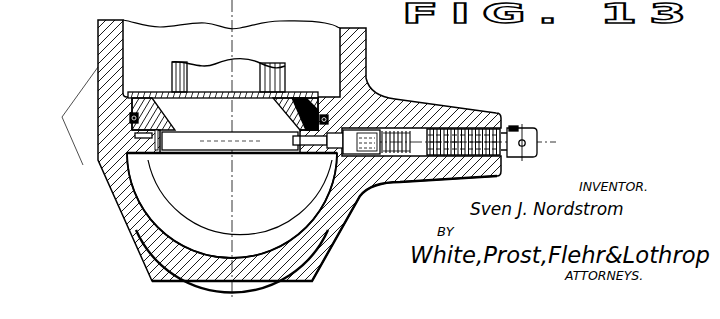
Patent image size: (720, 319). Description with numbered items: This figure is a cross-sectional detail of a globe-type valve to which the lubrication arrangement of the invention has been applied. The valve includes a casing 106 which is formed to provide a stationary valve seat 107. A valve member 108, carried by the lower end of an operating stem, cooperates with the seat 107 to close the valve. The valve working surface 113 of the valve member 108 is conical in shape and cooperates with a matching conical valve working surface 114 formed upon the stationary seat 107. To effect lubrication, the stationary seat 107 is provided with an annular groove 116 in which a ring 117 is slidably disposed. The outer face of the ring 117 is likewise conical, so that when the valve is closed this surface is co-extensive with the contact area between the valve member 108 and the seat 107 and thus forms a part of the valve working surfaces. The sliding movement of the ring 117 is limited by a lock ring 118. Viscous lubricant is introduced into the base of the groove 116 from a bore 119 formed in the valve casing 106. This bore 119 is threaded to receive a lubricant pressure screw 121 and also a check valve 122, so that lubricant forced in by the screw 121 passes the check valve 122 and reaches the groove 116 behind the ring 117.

The casing 106 is at (98, 68).
The stationary valve seat 107 is at (290, 153).
The valve member 108 is at (173, 72).
The valve working surface 113 is at (274, 102).
The valve working surface 114 is at (155, 153).
The annular groove 116 is at (100, 155).
The ring 117 is at (135, 133).
The lock ring 118 is at (130, 117).
The bore 119 is at (423, 131).
The lubricant pressure screw 121 is at (516, 127).
The check valve 122 is at (398, 156).